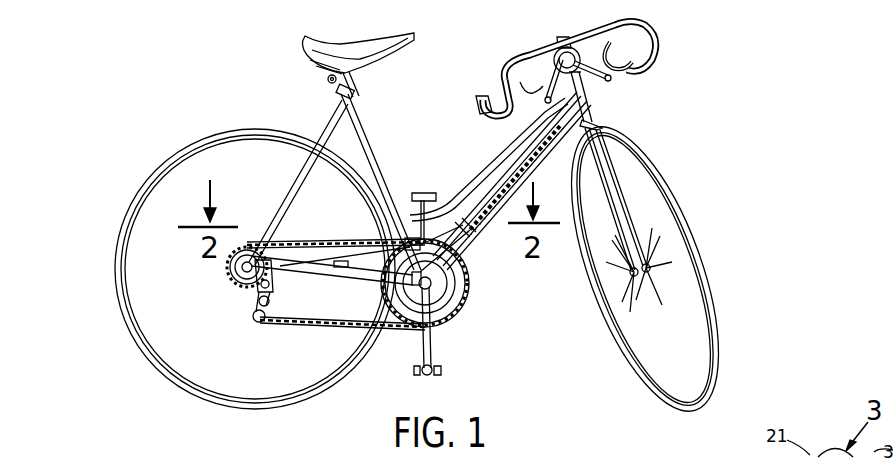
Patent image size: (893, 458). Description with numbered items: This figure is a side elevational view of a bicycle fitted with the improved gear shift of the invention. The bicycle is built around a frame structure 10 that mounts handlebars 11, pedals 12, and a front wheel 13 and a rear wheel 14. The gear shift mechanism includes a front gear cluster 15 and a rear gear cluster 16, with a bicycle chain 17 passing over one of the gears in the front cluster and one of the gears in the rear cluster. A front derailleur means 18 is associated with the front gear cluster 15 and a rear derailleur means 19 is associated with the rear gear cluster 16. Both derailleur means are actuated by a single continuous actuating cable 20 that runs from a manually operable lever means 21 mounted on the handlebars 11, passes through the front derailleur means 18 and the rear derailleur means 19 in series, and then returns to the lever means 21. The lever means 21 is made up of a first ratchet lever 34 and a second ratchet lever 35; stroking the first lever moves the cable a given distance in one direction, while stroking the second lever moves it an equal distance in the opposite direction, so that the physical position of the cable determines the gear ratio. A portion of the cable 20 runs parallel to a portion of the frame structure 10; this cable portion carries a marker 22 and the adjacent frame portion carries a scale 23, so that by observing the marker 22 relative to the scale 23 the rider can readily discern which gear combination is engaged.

The frame structure 10 is at (365, 118).
The handlebars 11 is at (643, 32).
The pedals 12 is at (438, 368).
The front wheel 13 is at (697, 246).
The rear wheel 14 is at (118, 232).
The front gear cluster 15 is at (464, 300).
The rear gear cluster 16 is at (228, 268).
The bicycle chain 17 is at (318, 327).
The front derailleur means 18 is at (405, 238).
The rear derailleur means 19 is at (276, 285).
The actuating cable 20 is at (492, 193).
The manually operable lever means 21 is at (569, 48).
The marker 22 is at (517, 170).
The scale 23 is at (494, 214).
The first ratchet lever 34 is at (608, 81).
The second ratchet lever 35 is at (551, 84).